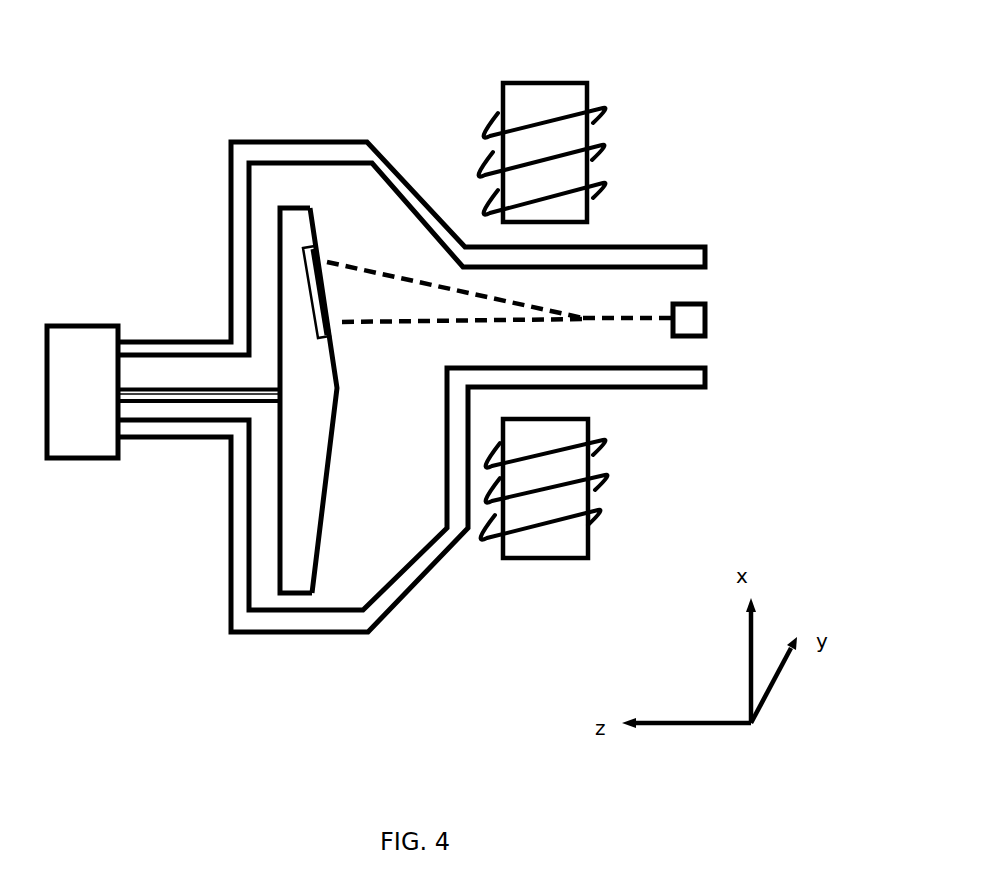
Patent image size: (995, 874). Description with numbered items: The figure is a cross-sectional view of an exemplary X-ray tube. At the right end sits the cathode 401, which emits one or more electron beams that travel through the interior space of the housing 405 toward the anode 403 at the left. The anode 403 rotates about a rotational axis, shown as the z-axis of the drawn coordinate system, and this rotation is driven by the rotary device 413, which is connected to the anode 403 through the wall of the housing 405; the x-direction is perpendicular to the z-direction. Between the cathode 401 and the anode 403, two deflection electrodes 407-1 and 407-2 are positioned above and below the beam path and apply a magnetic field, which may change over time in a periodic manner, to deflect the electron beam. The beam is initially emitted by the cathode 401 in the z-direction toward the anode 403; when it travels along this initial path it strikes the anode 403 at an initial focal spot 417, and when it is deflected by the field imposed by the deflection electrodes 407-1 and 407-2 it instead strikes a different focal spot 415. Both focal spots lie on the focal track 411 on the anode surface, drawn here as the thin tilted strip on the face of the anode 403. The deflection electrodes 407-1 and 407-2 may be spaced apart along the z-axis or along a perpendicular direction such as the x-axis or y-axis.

The cathode 401 is at (724, 316).
The anode 403 is at (303, 502).
The housing 405 is at (300, 135).
The deflection electrode 407-1 is at (618, 140).
The deflection electrode 407-2 is at (621, 485).
The focal track 411 is at (290, 293).
The rotary device 413 is at (202, 408).
The focal spot 415 is at (325, 240).
The initial focal spot 417 is at (335, 334).